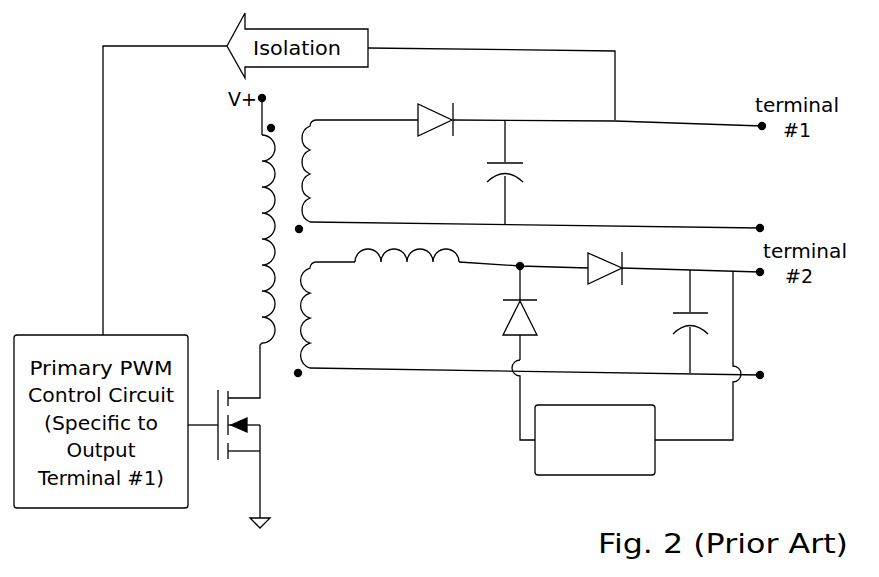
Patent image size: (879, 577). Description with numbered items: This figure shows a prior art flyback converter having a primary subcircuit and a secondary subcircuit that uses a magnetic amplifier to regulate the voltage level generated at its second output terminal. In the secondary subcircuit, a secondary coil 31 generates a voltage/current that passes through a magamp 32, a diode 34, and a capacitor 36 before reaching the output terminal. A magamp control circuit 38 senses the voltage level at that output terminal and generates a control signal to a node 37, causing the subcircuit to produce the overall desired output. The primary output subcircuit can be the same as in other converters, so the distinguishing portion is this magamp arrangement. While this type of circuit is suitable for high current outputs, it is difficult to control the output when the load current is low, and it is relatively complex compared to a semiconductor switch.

The secondary coil 31 is at (313, 311).
The magamp 32 is at (414, 274).
The diode 34 is at (622, 258).
The capacitor 36 is at (657, 321).
The node 37 is at (520, 258).
The magamp control circuit 38 is at (587, 456).